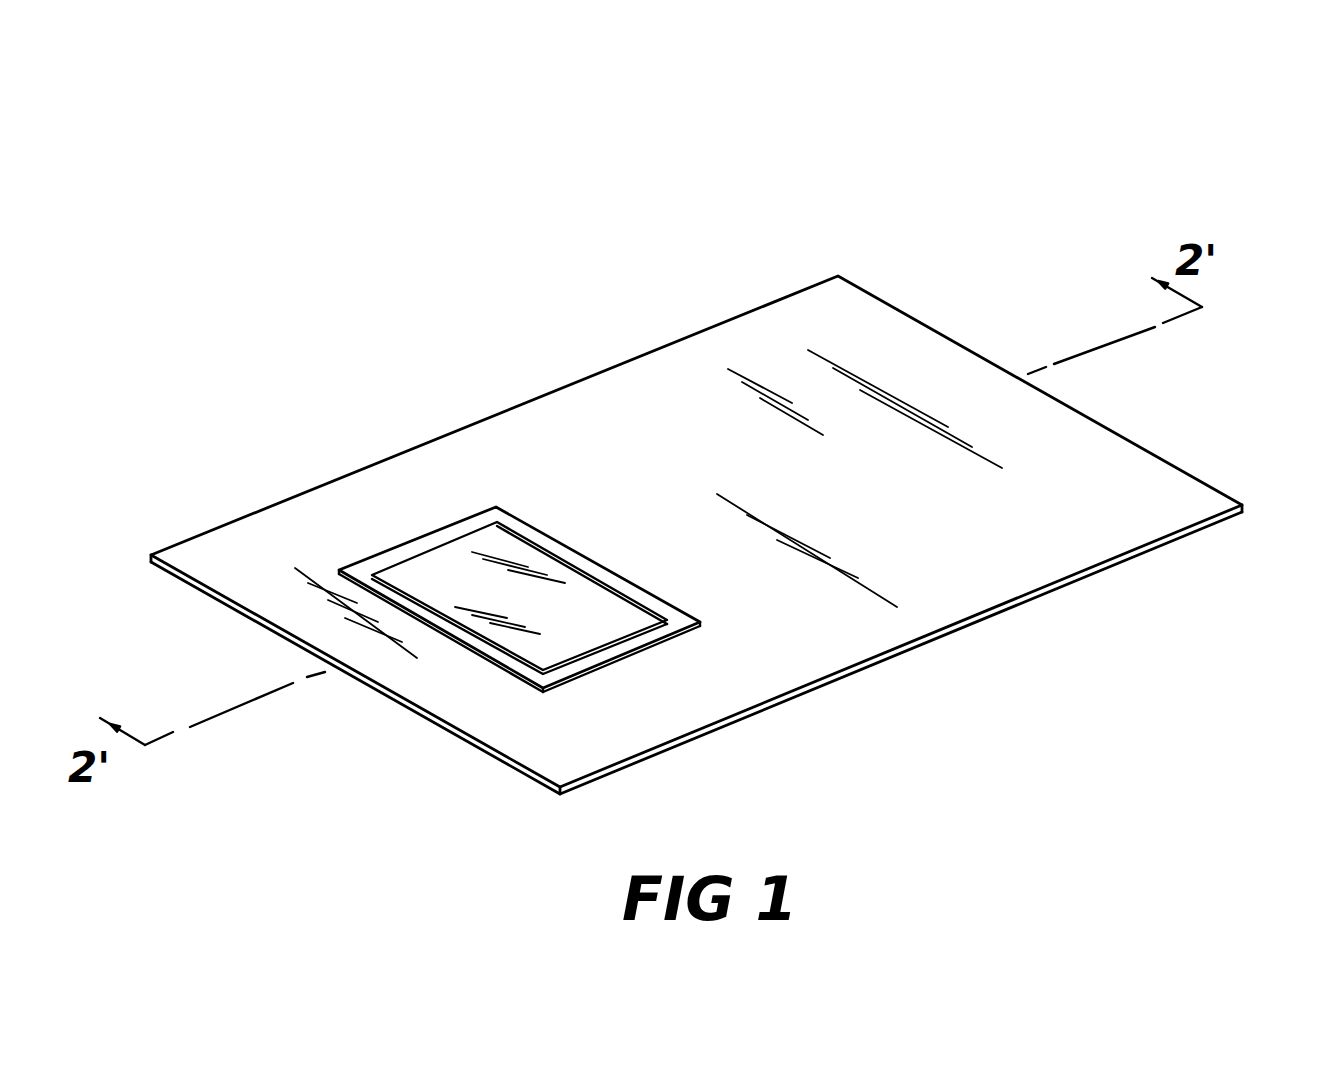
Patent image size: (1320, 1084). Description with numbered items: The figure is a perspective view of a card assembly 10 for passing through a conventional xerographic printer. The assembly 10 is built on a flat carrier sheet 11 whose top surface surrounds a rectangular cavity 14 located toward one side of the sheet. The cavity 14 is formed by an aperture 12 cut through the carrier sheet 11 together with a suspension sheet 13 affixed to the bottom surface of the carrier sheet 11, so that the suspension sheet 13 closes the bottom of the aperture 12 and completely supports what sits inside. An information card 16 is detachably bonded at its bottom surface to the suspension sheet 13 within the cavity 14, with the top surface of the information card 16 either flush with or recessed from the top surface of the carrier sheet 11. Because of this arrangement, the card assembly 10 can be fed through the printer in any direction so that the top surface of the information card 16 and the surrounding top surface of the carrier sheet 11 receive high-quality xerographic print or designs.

The card assembly 10 is at (995, 172).
The carrier sheet 11 is at (1187, 492).
The aperture 12 is at (473, 518).
The suspension sheet 13 is at (693, 614).
The cavity 14 is at (413, 533).
The information card 16 is at (577, 578).